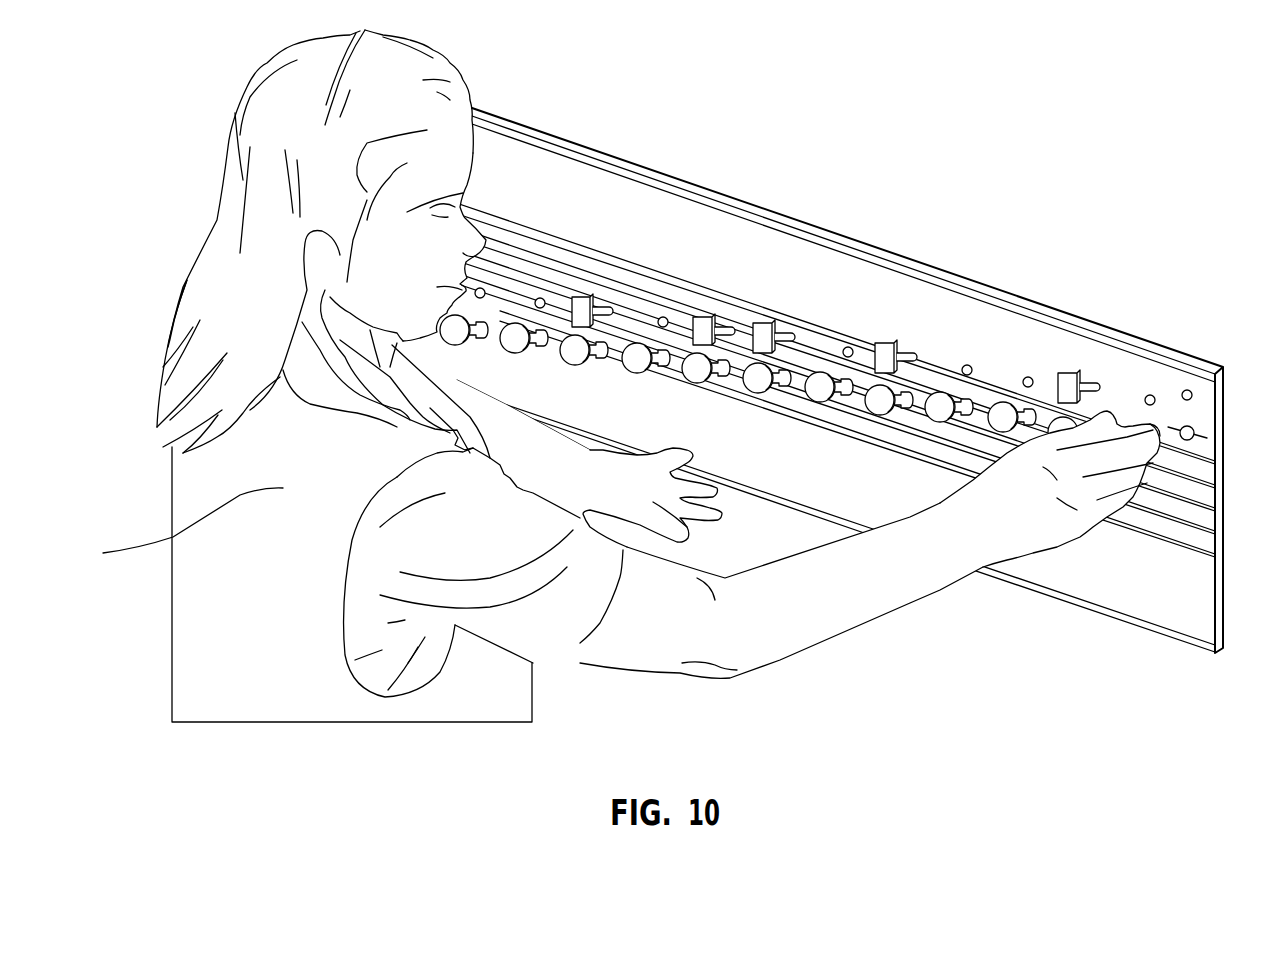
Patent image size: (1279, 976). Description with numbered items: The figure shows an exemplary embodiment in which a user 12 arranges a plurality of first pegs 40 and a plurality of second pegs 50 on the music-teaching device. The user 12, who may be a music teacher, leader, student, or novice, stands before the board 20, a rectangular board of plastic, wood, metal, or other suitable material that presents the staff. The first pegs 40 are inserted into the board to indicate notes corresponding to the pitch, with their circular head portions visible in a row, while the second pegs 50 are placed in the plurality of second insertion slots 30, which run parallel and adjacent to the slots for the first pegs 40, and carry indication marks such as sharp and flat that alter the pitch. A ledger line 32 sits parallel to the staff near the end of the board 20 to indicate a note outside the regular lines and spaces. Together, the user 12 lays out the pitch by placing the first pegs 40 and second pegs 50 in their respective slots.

The user 12 is at (620, 376).
The board 20 is at (850, 272).
The second insertion slots 30 is at (968, 364).
The ledger line 32 is at (1203, 431).
The first pegs 40 is at (940, 394).
The second pegs 50 is at (764, 323).